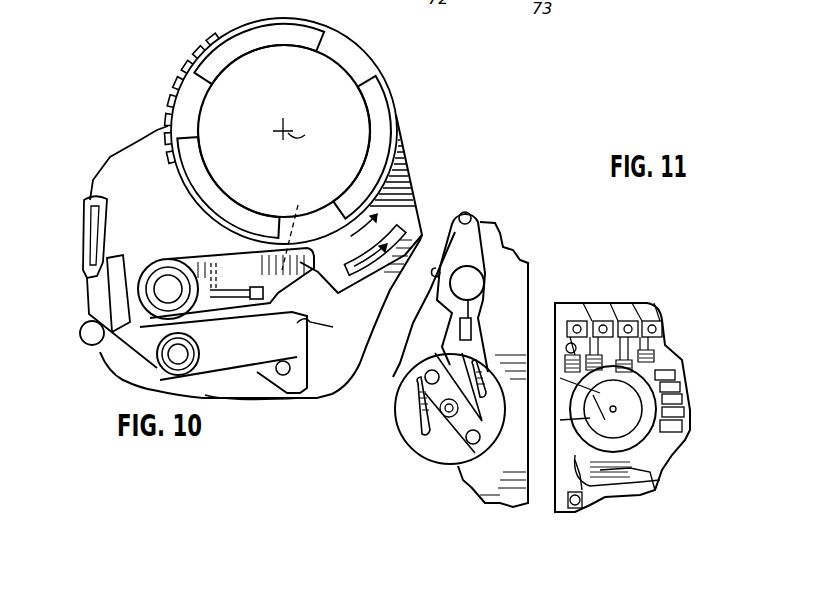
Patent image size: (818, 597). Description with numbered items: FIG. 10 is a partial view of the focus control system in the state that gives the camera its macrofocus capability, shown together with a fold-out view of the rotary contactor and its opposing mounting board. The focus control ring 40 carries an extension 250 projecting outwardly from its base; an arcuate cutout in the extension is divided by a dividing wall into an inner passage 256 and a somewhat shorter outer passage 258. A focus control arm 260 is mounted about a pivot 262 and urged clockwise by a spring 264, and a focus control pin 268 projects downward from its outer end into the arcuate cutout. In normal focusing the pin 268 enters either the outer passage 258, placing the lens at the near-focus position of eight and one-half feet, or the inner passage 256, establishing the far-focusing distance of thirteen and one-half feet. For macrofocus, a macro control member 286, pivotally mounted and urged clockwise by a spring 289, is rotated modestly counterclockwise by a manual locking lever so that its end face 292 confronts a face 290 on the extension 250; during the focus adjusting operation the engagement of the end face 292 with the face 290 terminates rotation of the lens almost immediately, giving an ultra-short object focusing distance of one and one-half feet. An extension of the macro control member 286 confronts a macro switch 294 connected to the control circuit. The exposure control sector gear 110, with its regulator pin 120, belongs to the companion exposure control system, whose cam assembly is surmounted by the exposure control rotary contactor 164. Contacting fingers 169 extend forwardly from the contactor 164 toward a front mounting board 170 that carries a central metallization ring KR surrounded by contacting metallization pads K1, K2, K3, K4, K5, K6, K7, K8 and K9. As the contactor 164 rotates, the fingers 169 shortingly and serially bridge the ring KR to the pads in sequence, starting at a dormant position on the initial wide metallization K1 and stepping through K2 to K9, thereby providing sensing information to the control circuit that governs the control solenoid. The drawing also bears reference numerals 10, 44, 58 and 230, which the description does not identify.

In FIG. 11, the frame 10 is at (468, 487).
In FIG. 10, the focus control ring 40 is at (392, 78).
In FIG. 10, the drum axis 44 is at (301, 131).
In FIG. 10, the gear teeth 58 is at (178, 90).
In FIG. 11, the exposure control sector gear 110 is at (393, 377).
In FIG. 11, the regulator pin 120 is at (478, 212).
In FIG. 11, the exposure control rotary contactor assembly 164 is at (415, 453).
In FIG. 11, the contacting fingers 169 is at (418, 410).
In FIG. 11, the front mounting board 170 is at (560, 500).
In FIG. 10, the ring segments 230 is at (250, 38).
In FIG. 10, the extension 250 is at (410, 180).
In FIG. 10, the inner passage 256 is at (350, 233).
In FIG. 10, the outer passage 258 is at (363, 252).
In FIG. 10, the focus control arm 260 is at (207, 255).
In FIG. 10, the pivot 262 is at (143, 273).
In FIG. 10, the spring 264 is at (220, 293).
In FIG. 10, the focus control pin 268 is at (295, 227).
In FIG. 10, the macro control member 286 is at (237, 398).
In FIG. 10, the spring 289 is at (278, 352).
In FIG. 10, the face 290 is at (329, 325).
In FIG. 10, the end face 292 is at (307, 345).
In FIG. 10, the macro switch 294 is at (206, 262).
In FIG. 11, the initial wide metallization pad K1 is at (640, 485).
In FIG. 11, the contacting metallization pad K2 is at (685, 440).
In FIG. 11, the contacting metallization pad K3 is at (678, 405).
In FIG. 11, the contacting metallization pad K4 is at (672, 392).
In FIG. 11, the contacting metallization pad K5 is at (670, 368).
In FIG. 11, the contacting metallization pad K6 is at (665, 355).
In FIG. 11, the contacting metallization pad K7 is at (605, 380).
In FIG. 11, the contacting metallization pad K8 is at (609, 414).
In FIG. 11, the contacting metallization pad K9 is at (560, 392).
In FIG. 11, the central metallization ring KR is at (560, 432).